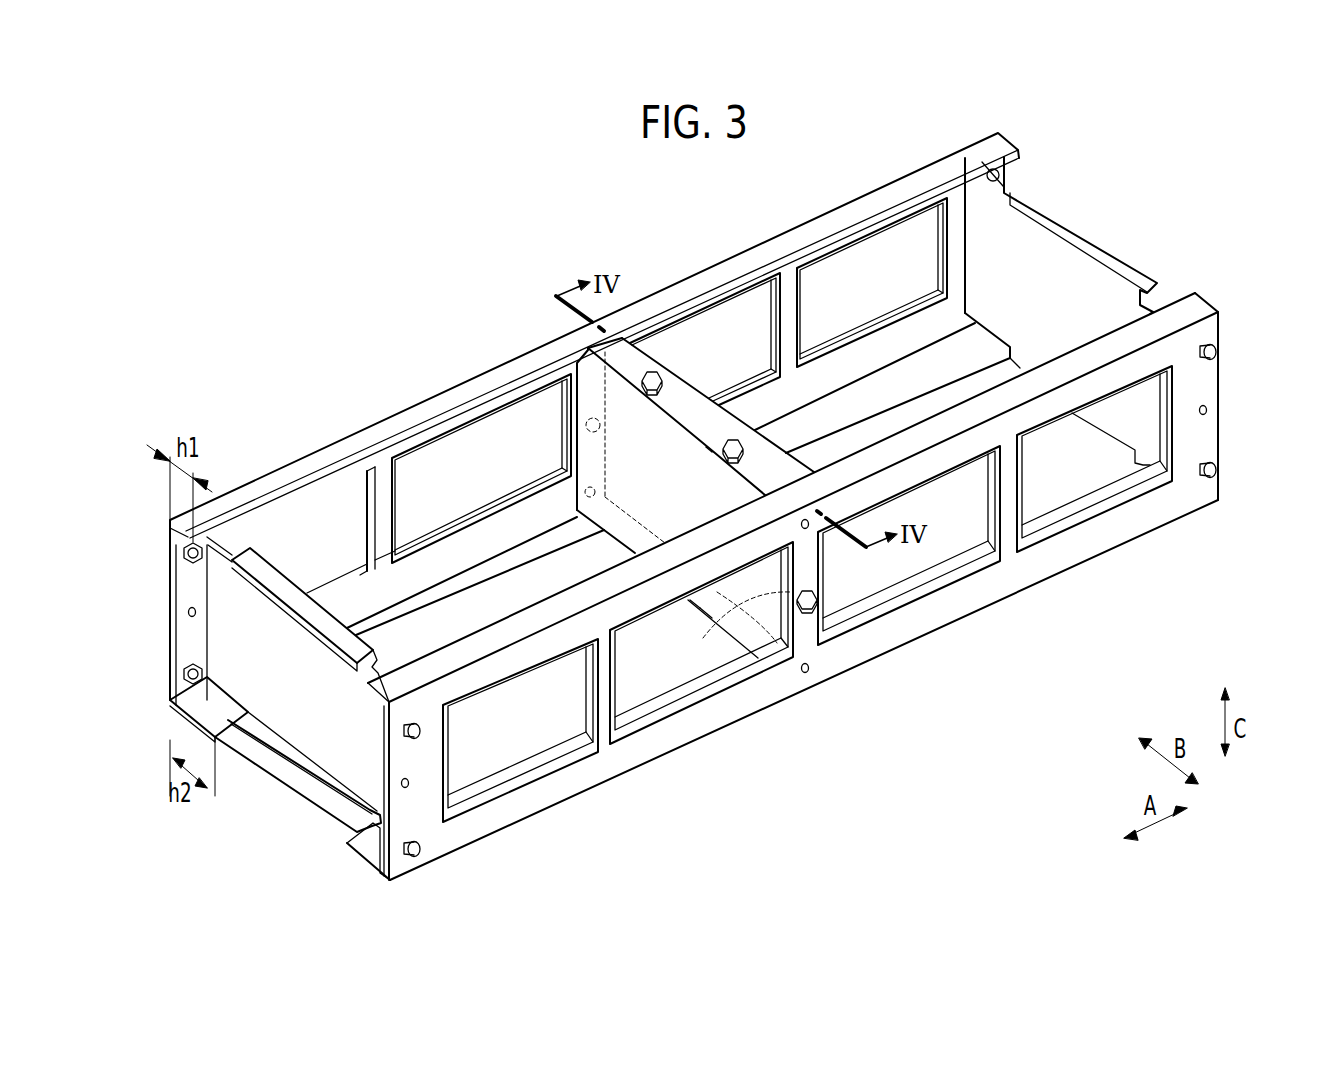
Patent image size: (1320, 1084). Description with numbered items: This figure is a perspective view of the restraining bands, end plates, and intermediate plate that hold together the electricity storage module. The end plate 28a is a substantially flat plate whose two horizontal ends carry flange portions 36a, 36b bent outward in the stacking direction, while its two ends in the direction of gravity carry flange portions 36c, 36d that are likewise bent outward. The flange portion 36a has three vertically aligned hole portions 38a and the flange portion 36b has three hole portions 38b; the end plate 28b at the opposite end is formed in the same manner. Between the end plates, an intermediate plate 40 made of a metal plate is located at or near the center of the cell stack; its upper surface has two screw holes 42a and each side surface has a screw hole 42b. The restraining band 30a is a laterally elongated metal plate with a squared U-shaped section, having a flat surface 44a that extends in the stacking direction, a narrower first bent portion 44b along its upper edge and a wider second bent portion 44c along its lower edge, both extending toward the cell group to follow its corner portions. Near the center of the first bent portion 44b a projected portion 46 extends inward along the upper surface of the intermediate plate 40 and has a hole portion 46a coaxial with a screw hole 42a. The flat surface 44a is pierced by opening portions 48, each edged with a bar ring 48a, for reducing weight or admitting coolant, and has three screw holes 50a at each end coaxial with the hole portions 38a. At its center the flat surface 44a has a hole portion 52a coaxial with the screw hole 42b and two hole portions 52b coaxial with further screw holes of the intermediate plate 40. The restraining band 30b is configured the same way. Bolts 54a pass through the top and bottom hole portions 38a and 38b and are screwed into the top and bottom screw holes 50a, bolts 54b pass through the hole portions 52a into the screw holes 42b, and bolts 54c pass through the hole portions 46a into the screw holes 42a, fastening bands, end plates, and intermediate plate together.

The end plate 28a is at (292, 795).
The end plate 28b is at (1097, 228).
The restraining band 30a is at (671, 758).
The restraining band 30b is at (447, 390).
The flange portion 36a is at (385, 718).
The flange portion 36b is at (174, 638).
The flange portion 36c is at (307, 613).
The flange portion 36d is at (278, 757).
The hole portions 38a is at (403, 840).
The hole portions 38b is at (198, 616).
The intermediate plate 40 is at (692, 390).
The screw holes 42a is at (643, 452).
The screw hole 42b is at (674, 635).
The flat surface 44a is at (595, 683).
The first bent portion 44b is at (452, 653).
The second bent portion 44c is at (368, 848).
The projected portion 46 is at (748, 468).
The hole portion 46a is at (712, 452).
The opening portions 48 is at (343, 505).
The bar ring 48a is at (770, 392).
The screw holes 50a is at (410, 782).
The hole portion 52a is at (674, 639).
The hole portions 52b is at (807, 533).
The bolts 54a is at (182, 559).
The bolts 54b is at (586, 427).
The bolts 54c is at (650, 370).